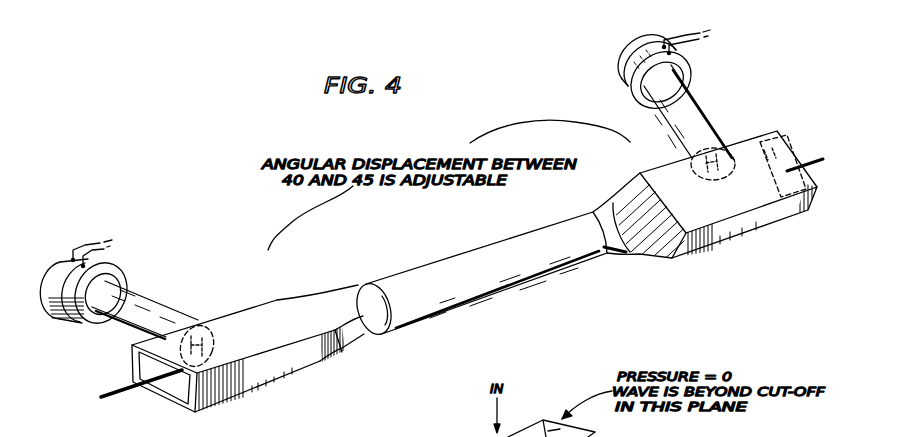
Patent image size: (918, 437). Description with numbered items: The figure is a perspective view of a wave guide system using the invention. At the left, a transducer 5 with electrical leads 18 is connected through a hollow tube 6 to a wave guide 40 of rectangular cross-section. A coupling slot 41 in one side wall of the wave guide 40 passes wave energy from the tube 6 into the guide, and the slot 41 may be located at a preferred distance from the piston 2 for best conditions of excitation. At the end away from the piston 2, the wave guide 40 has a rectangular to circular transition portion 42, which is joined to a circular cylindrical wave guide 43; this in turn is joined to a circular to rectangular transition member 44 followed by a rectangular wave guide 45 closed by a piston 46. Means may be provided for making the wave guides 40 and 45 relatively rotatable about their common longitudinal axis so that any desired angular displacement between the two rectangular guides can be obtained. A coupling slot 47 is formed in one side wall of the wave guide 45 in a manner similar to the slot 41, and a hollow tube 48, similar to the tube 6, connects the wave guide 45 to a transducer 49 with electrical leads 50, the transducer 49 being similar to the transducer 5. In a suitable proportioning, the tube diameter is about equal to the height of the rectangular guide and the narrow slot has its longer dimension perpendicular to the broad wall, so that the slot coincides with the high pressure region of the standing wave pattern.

The piston 2 is at (183, 387).
The transducer 5 is at (66, 262).
The hollow tube 6 is at (150, 307).
The electrical leads 18 is at (87, 243).
The wave guide 40 is at (260, 318).
The coupling slot 41 is at (203, 340).
The rectangular to circular transition portion 42 is at (327, 300).
The circular cylindrical wave guide 43 is at (478, 250).
The circular to rectangular transition member 44 is at (630, 197).
The rectangular wave guide 45 is at (665, 172).
The piston 46 is at (787, 153).
The coupling slot 47 is at (737, 147).
The hollow tube 48 is at (690, 114).
The transducer 49 is at (633, 63).
The electrical leads 50 is at (683, 32).